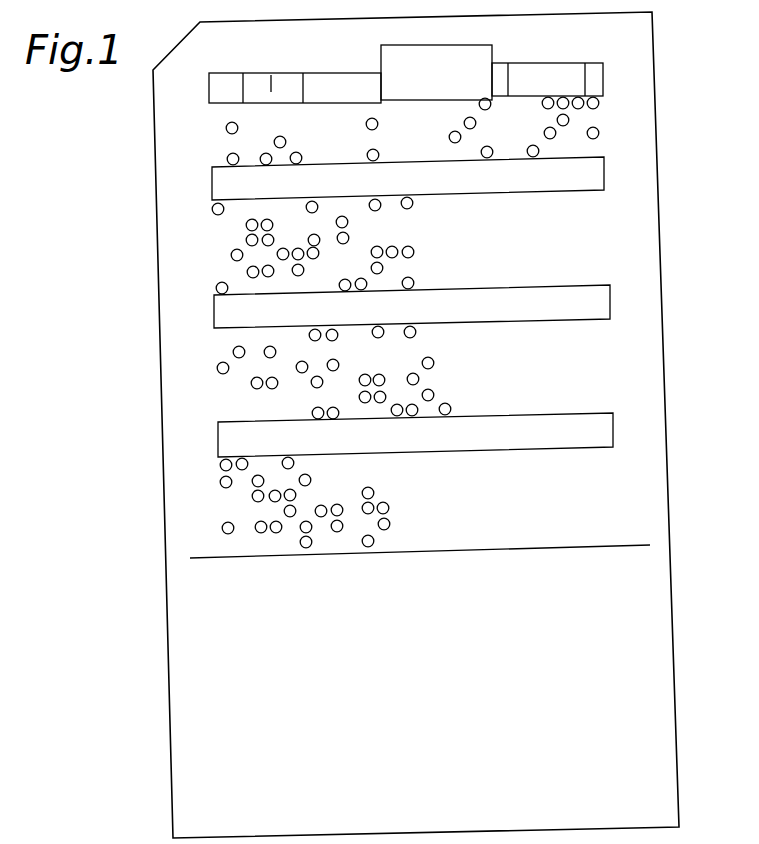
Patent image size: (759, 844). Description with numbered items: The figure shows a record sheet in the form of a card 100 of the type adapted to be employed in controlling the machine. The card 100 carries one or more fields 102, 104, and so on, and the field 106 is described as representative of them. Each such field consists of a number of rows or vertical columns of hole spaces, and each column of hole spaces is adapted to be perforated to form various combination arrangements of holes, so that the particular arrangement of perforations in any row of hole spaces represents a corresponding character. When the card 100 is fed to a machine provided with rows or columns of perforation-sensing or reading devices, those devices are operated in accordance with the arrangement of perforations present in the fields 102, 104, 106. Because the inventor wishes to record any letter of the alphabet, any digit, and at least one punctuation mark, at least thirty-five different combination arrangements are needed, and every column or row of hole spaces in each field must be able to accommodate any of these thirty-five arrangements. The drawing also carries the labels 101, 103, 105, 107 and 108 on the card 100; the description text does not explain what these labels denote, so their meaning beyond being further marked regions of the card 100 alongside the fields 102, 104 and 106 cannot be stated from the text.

The card 100 is at (655, 218).
The header field boxes (month, day, year, P.O. number, policy number, premium) 101 is at (213, 97).
The field 102 is at (388, 131).
The name field 103 is at (214, 187).
The field 104 is at (294, 245).
The street address field 105 is at (228, 316).
The field 106 is at (314, 372).
The city and state field 107 is at (228, 441).
The fourth row of punched holes 108 is at (283, 502).